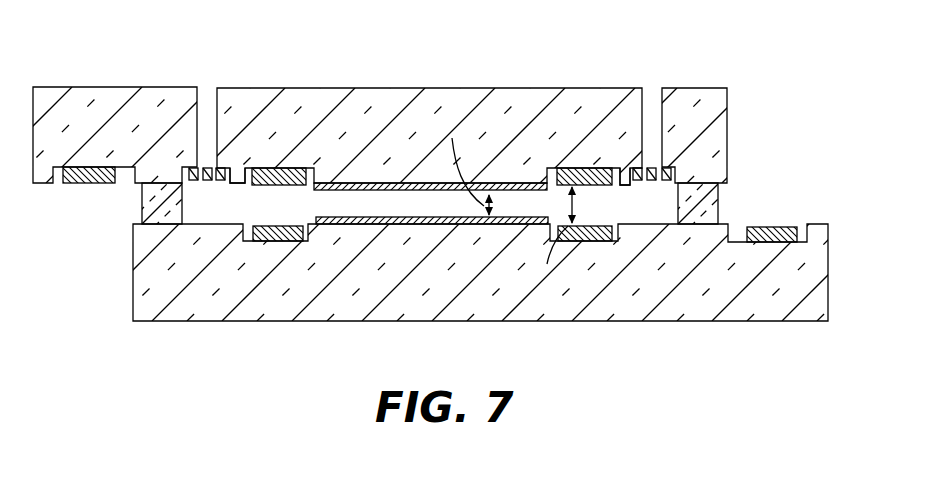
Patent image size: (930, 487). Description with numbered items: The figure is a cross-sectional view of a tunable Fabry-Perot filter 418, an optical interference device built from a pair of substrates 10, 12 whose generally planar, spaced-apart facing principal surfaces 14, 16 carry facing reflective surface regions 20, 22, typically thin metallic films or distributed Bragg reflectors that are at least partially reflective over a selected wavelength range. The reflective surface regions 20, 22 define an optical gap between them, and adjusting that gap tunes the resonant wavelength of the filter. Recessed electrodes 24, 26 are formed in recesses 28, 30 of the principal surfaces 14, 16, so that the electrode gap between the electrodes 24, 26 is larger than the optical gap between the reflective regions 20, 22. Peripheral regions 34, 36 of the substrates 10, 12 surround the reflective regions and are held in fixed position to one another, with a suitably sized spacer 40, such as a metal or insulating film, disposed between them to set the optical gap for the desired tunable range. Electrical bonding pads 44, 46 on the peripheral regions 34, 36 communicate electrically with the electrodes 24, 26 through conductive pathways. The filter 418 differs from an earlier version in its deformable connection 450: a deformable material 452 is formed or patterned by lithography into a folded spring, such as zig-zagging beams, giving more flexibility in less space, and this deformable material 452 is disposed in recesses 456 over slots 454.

The Fabry-Perot filter 418 is at (143, 21).
The peripheral region 34 is at (187, 85).
The electrical bonding pad 44 is at (88, 183).
The substrate 10 is at (404, 88).
The recessed electrode 24 is at (277, 167).
The recesses 456 is at (627, 167).
The principal surface 14 is at (364, 192).
The facing reflective surface region 20 is at (521, 183).
The recess 28 is at (310, 188).
The deformable material 452 is at (652, 182).
The deformable connection 450 is at (664, 61).
The slots 454 is at (650, 128).
The spacer 40 is at (142, 203).
The recess 30 is at (250, 222).
The substrate 12 is at (285, 312).
The principal surface 16 is at (373, 215).
The facing reflective surface region 22 is at (362, 226).
The recessed electrode 26 is at (277, 241).
The electrical bonding pad 46 is at (773, 226).
The peripheral region 36 is at (827, 325).